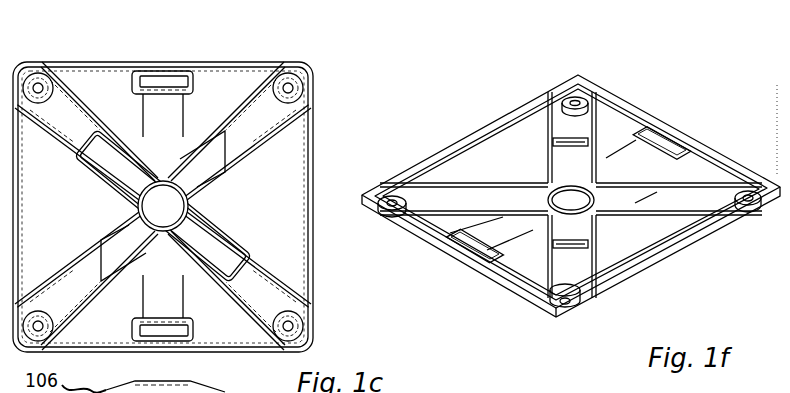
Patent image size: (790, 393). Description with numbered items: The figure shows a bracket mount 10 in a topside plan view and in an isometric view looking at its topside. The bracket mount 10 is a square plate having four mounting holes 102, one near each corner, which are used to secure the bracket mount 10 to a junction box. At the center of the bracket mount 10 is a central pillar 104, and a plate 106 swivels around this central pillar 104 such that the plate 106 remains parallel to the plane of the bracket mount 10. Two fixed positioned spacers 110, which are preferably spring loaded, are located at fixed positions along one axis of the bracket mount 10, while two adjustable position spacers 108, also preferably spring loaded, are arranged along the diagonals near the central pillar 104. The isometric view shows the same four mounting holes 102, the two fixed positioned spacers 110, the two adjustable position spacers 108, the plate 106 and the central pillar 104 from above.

In FIG. 1C, the bracket mount 10 is at (147, 52).
In FIG. 1F, the bracket mount 10 is at (490, 320).
In FIG. 1C, the mounting holes 102 is at (291, 84).
In FIG. 1F, the mounting holes 102 is at (563, 303).
In FIG. 1C, the central pillar 104 is at (188, 207).
In FIG. 1F, the central pillar 104 is at (550, 203).
In FIG. 1C, the plate 106 is at (100, 262).
In FIG. 1C, the adjustable position spacers 108 is at (95, 150).
In FIG. 1F, the adjustable position spacers 108 is at (562, 142).
In FIG. 1C, the fixed positioned spacers 110 is at (184, 81).
In FIG. 1F, the fixed positioned spacers 110 is at (643, 135).